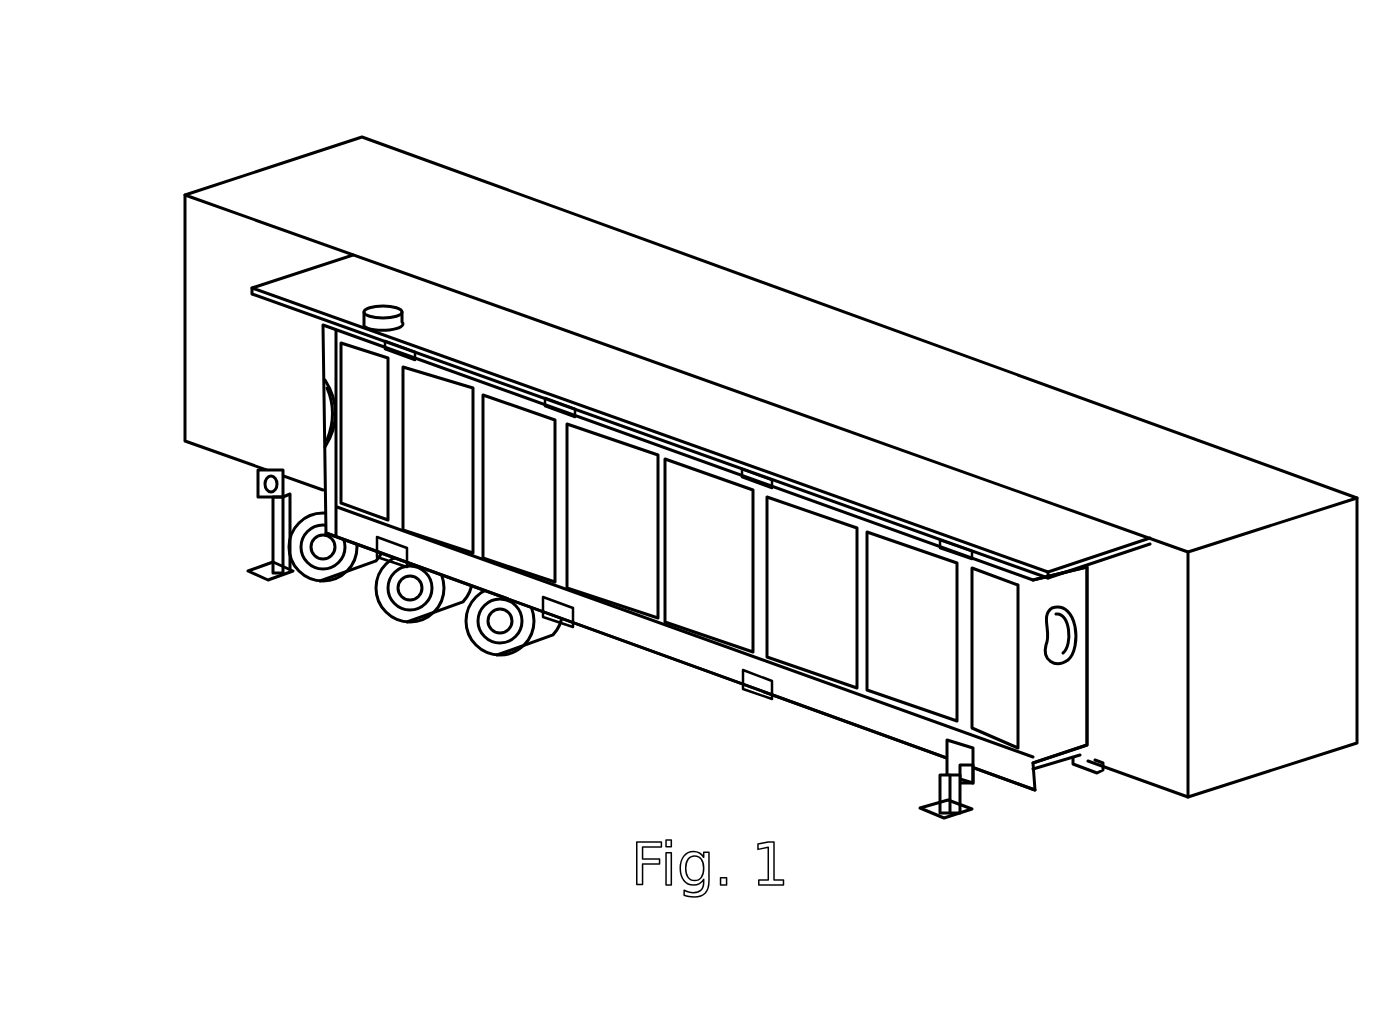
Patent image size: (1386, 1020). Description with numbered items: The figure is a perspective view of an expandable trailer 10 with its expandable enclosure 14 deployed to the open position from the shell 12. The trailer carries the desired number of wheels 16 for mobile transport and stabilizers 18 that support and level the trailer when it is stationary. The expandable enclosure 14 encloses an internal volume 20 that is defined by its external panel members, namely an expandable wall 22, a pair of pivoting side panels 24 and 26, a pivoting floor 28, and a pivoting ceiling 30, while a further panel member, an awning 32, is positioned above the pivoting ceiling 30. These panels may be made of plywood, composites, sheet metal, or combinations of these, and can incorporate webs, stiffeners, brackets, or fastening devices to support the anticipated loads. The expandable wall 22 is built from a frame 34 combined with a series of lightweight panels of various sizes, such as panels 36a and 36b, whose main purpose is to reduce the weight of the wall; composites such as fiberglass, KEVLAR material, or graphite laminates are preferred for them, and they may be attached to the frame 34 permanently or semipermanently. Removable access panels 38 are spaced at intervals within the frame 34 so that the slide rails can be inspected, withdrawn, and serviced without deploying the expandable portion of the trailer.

The expandable trailer 10 is at (802, 176).
The shell 12 is at (1025, 402).
The expandable enclosure 14 is at (1018, 517).
The wheels 16 is at (490, 625).
The stabilizers 18 is at (282, 530).
The internal volume 20 is at (1060, 632).
The expandable wall 22 is at (630, 622).
The pivoting side panel 24 is at (323, 413).
The pivoting side panel 26 is at (1067, 706).
The pivoting floor 28 is at (1058, 773).
The pivoting ceiling 30 is at (382, 305).
The awning 32 is at (558, 348).
The frame 34 is at (692, 648).
The panel 36a is at (893, 682).
The panel 36b is at (983, 723).
The removable access panels 38 is at (752, 476).